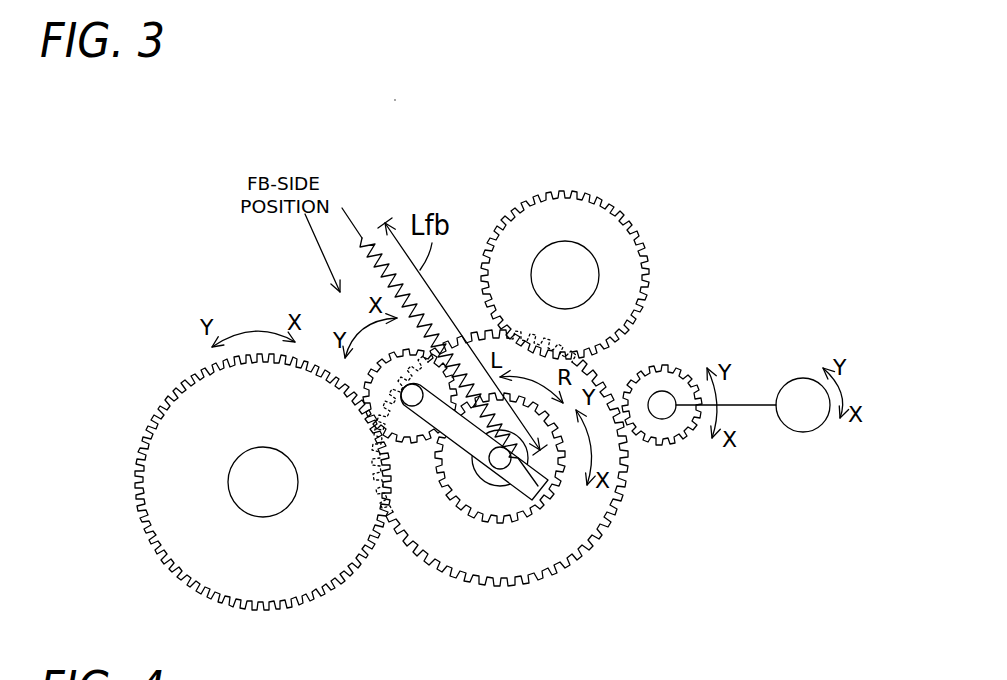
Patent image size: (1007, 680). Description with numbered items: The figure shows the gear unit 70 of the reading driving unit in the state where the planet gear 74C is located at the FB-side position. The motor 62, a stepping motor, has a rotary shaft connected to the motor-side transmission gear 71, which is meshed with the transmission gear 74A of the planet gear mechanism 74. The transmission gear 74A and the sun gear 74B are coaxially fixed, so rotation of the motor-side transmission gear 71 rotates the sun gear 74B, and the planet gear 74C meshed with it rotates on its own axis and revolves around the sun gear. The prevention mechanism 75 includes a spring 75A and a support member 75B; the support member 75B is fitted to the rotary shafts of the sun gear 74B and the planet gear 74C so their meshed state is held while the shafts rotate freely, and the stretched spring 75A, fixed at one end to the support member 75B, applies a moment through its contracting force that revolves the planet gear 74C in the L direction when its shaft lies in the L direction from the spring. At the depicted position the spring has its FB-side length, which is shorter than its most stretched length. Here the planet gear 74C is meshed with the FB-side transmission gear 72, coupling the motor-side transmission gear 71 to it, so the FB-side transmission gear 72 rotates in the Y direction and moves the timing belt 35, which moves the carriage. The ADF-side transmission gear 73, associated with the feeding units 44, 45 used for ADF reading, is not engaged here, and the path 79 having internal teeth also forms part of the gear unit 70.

The gear unit 70 is at (295, 100).
The FB-side transmission gear 72 is at (200, 383).
The timing belt 35 is at (263, 482).
The planet gear mechanism 74 is at (598, 594).
The transmission gear 74A is at (630, 482).
The sun gear 74B is at (560, 480).
The planet gear 74C is at (360, 386).
The ADF-side transmission gear 73 is at (577, 190).
The feeding unit 44 is at (583, 275).
The feeding unit 45 is at (565, 275).
The motor-side transmission gear 71 is at (672, 367).
The motor 62 is at (808, 378).
The path 79 is at (398, 347).
The prevention mechanism 75 is at (362, 202).
The spring 75A is at (353, 221).
The support member 75B is at (461, 434).